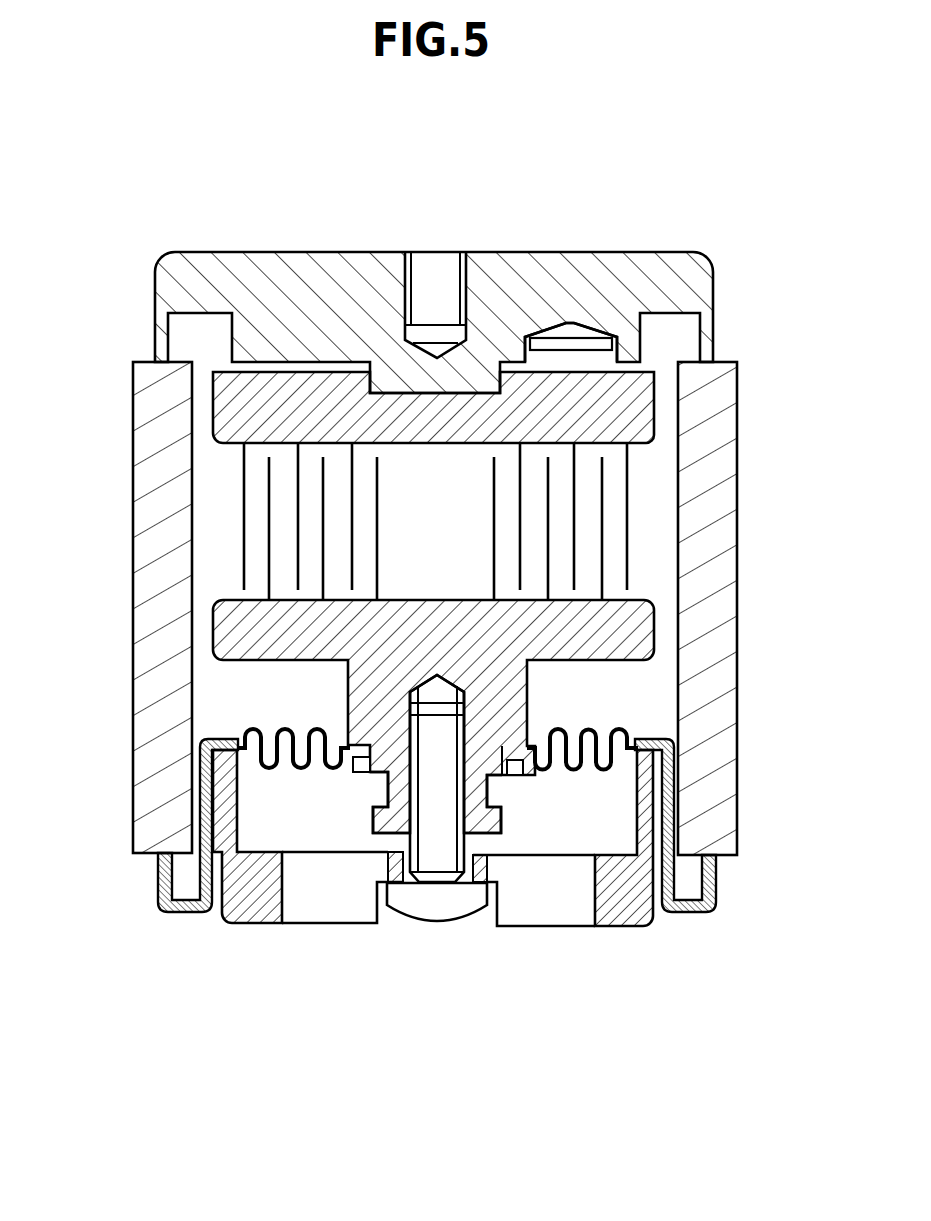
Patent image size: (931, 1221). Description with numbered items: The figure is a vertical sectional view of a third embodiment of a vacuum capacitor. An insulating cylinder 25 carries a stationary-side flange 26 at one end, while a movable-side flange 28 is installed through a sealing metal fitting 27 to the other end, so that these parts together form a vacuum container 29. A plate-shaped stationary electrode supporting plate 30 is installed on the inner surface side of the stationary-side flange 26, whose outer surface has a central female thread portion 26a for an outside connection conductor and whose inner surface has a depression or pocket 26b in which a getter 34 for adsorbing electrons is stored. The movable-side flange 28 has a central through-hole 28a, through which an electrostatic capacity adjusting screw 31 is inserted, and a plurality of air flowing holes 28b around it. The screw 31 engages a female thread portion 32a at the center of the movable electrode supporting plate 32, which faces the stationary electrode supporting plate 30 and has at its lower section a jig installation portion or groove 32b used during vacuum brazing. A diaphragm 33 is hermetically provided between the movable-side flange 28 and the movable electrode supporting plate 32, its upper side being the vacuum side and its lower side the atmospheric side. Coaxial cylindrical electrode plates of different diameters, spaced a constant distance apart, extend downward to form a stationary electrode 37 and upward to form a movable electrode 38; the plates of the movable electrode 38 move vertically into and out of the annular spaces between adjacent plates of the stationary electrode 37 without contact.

The insulating cylinder 25 is at (735, 561).
The stationary-side flange 26 is at (330, 262).
The female thread portion 26a is at (428, 265).
The depression or pocket 26b is at (541, 327).
The sealing metal fitting 27 is at (693, 915).
The movable-side flange 28 is at (252, 927).
The through-hole 28a is at (465, 875).
The air flowing holes 28b is at (363, 903).
The vacuum container 29 is at (738, 637).
The stationary electrode supporting plate 30 is at (248, 378).
The electrostatic capacity adjusting screw 31 is at (410, 918).
The movable electrode supporting plate 32 is at (237, 613).
The female thread portion 32a is at (407, 746).
The jig installation portion or groove 32b is at (488, 793).
The diaphragm 33 is at (308, 733).
The getter 34 is at (563, 342).
The stationary electrode 37 is at (240, 493).
The movable electrode 38 is at (603, 490).